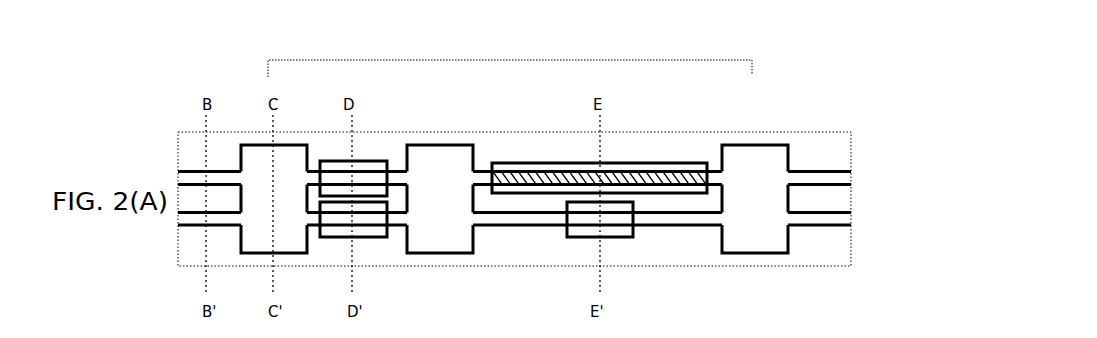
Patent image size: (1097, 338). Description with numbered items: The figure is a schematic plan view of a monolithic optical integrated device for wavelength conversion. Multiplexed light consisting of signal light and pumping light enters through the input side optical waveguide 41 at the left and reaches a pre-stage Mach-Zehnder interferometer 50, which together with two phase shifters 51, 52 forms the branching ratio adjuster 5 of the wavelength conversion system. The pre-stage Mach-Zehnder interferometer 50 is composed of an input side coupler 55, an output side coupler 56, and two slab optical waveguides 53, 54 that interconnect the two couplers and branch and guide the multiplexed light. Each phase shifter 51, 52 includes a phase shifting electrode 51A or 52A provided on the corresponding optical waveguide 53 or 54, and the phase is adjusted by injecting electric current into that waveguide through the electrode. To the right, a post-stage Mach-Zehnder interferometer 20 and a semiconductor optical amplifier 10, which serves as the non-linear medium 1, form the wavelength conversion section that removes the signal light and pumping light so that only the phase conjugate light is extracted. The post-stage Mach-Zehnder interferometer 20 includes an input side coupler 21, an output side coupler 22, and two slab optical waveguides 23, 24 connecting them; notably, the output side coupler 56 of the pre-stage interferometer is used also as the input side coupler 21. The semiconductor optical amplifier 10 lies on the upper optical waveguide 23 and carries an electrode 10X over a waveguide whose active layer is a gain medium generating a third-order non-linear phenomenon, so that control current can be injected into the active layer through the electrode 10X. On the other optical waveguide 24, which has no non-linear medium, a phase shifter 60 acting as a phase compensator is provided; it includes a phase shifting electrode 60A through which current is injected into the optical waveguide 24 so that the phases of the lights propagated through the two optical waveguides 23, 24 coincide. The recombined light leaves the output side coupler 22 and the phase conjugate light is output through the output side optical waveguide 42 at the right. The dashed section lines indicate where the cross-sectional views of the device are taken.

The pre-stage Mach-Zehnder interferometer 50 is at (310, 174).
The branching ratio adjuster 5 is at (310, 174).
The post-stage Mach-Zehnder interferometer 20 is at (662, 166).
The input side optical waveguide 41 is at (196, 172).
The output side optical waveguide 42 is at (828, 222).
The input side coupler 55 is at (257, 152).
The output side coupler 56 is at (442, 174).
The input side coupler 21 is at (431, 155).
The phase shifter 51 is at (344, 143).
The phase shifting electrode 51A is at (376, 159).
The phase shifter 52 is at (359, 269).
The phase shifting electrode 52A is at (366, 239).
The optical waveguide 53 is at (398, 178).
The optical waveguide 54 is at (395, 223).
The semiconductor optical amplifier 10 is at (599, 139).
The non-linear medium 1 is at (599, 139).
The electrode 10X is at (562, 166).
The optical waveguide 23 is at (722, 170).
The optical waveguide 24 is at (684, 222).
The phase shifter 60 is at (601, 262).
The phase shifting electrode 60A is at (577, 240).
The output side coupler 22 is at (747, 148).